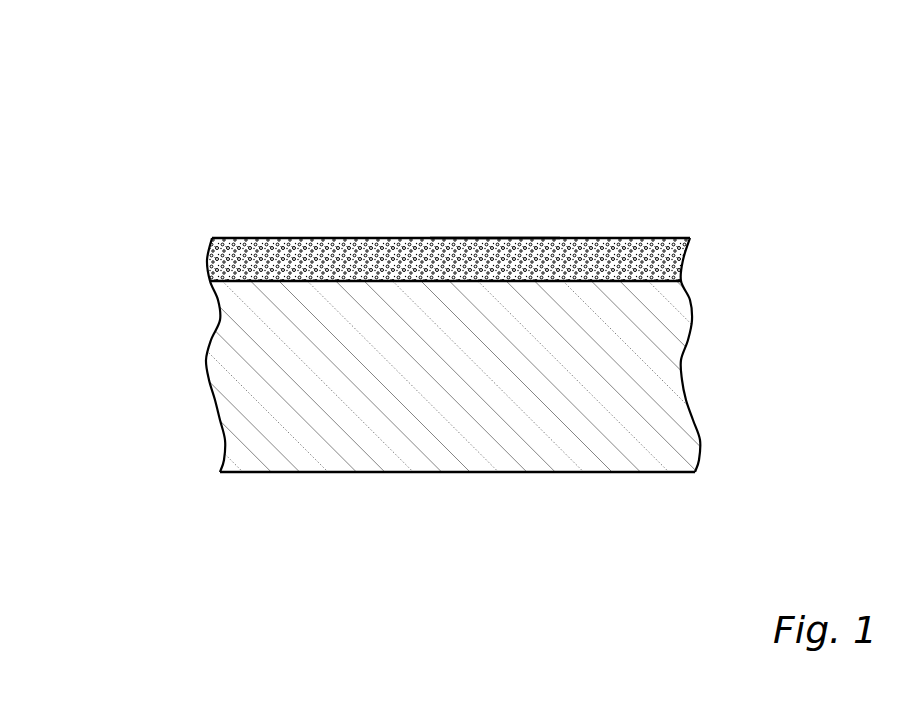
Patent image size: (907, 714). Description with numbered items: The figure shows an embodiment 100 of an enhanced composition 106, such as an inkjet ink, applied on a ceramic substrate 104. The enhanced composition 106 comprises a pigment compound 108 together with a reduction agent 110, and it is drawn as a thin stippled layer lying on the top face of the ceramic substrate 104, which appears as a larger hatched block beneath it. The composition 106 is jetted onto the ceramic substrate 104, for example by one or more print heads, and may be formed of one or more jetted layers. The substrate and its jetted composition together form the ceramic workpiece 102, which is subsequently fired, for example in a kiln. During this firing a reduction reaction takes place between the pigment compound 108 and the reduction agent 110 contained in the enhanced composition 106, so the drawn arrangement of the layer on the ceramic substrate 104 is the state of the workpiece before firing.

The embodiment 100 is at (752, 133).
The ceramic workpiece 102 is at (733, 217).
The ceramic substrate 104 is at (395, 472).
The enhanced composition 106 is at (370, 211).
The pigment compound 108 is at (365, 238).
The reduction agent 110 is at (497, 238).